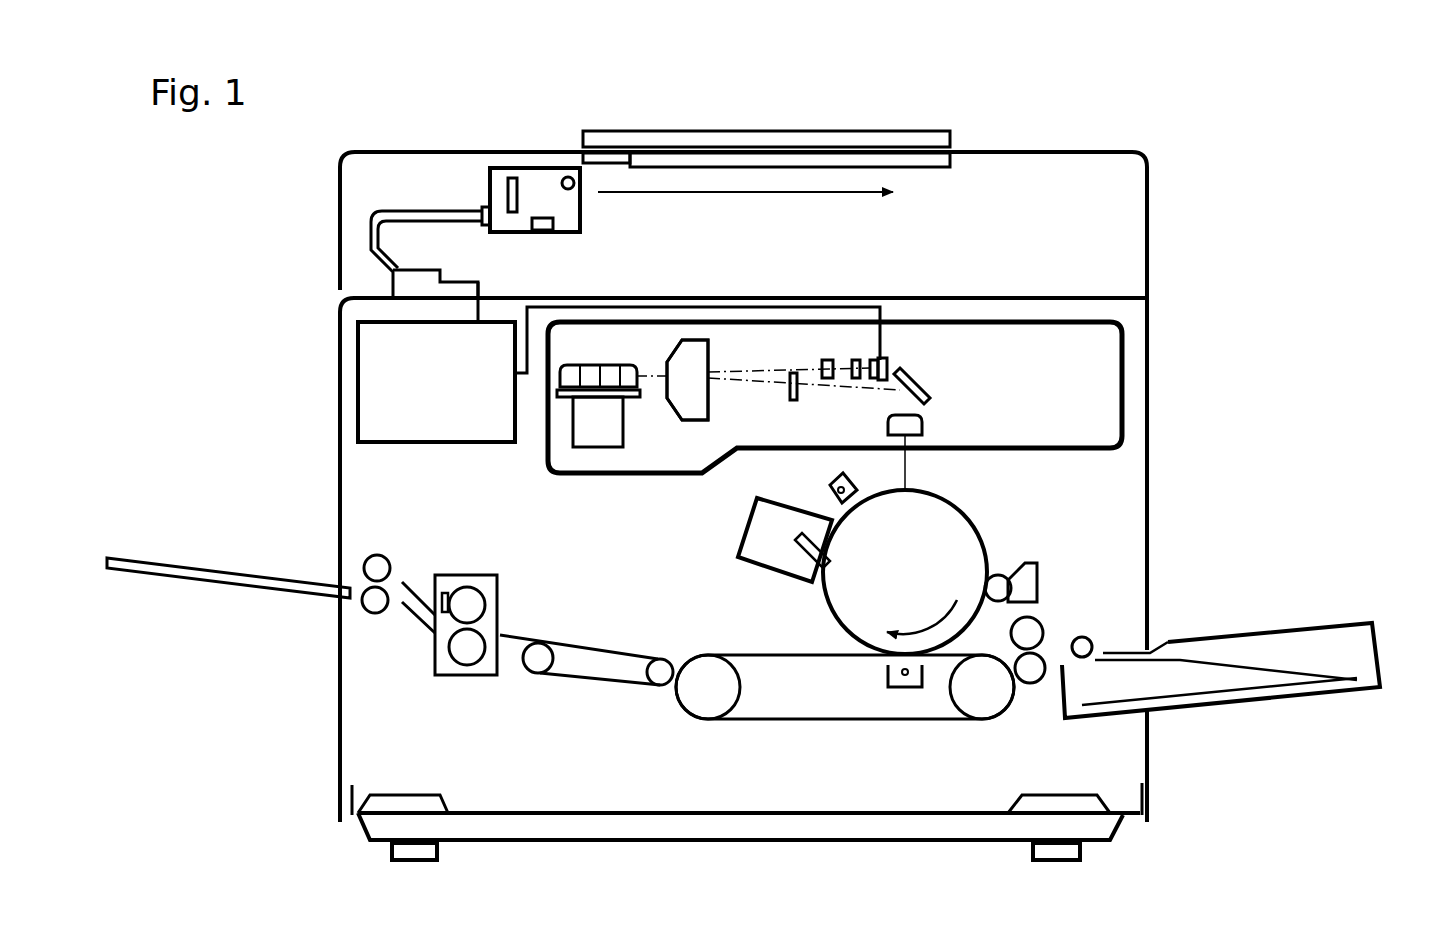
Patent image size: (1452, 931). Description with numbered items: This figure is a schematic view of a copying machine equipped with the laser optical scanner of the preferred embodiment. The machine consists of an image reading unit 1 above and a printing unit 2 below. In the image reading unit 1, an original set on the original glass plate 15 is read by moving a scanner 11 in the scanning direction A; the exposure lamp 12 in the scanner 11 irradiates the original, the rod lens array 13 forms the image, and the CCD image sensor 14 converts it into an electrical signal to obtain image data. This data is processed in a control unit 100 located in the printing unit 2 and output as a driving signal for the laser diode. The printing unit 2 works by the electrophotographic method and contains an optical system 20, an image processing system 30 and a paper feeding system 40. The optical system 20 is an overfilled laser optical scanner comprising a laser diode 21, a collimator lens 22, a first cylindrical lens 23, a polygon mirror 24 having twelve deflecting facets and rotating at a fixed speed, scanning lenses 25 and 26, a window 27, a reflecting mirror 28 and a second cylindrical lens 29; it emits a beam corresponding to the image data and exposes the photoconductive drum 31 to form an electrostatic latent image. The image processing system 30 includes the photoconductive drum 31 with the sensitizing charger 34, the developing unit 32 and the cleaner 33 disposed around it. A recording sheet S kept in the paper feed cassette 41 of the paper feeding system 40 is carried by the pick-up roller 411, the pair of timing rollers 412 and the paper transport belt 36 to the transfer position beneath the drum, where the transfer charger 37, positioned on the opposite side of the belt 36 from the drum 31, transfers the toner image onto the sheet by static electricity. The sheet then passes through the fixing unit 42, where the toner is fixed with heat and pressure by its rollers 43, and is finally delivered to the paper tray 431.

The image reading unit 1 is at (1153, 197).
The printing unit 2 is at (1160, 417).
The scanner 11 is at (481, 168).
The exposure lamp 12 is at (568, 177).
The rod lens array 13 is at (520, 178).
The CCD image sensor 14 is at (545, 232).
The original glass plate 15 is at (935, 165).
The optical system 20 is at (1083, 459).
The laser diode 21 is at (886, 362).
The collimator lens 22 is at (856, 360).
The first cylindrical lens 23 is at (825, 360).
The polygon mirror 24 is at (600, 365).
The scanning lens 25 is at (682, 420).
The scanning lens 26 is at (687, 380).
The window 27 is at (792, 400).
The reflecting mirror 28 is at (925, 385).
The second cylindrical lens 29 is at (922, 428).
The image processing system 30 is at (733, 567).
The photoconductive drum 31 is at (829, 601).
The developing unit 32 is at (1037, 565).
The cleaner 33 is at (748, 530).
The sensitizing charger 34 is at (833, 490).
The paper transport belt 36 is at (833, 722).
The transfer charger 37 is at (895, 688).
The paper feeding system 40 is at (1386, 655).
The paper feed cassette 41 is at (1248, 712).
The fixing unit 42 is at (455, 552).
The discharge rollers 43 is at (377, 554).
The control unit 100 is at (358, 355).
The pick-up roller 411 is at (1092, 638).
The timing rollers 412 is at (1033, 684).
The paper tray 431 is at (233, 570).
The recording sheet S is at (1248, 667).
The scanning direction A is at (745, 213).